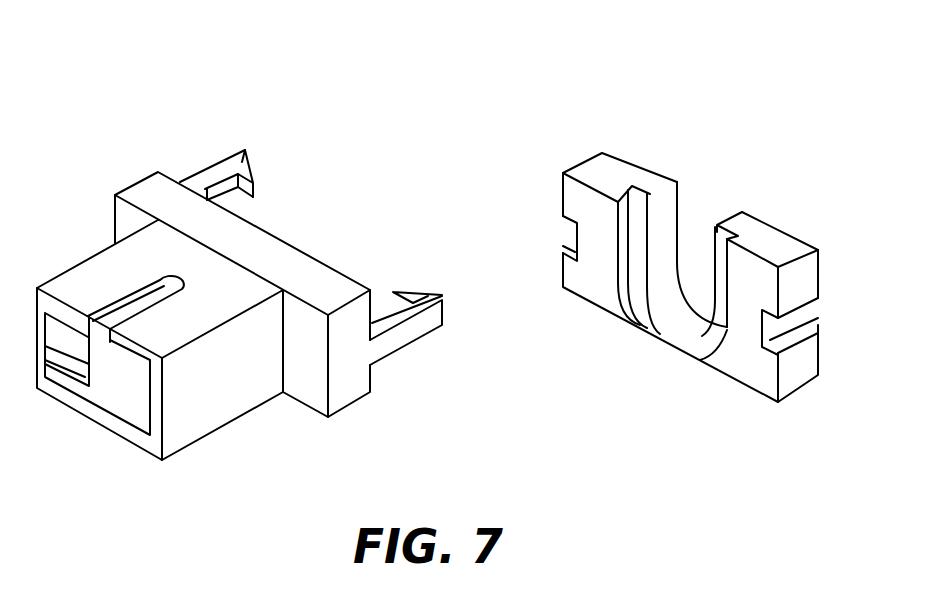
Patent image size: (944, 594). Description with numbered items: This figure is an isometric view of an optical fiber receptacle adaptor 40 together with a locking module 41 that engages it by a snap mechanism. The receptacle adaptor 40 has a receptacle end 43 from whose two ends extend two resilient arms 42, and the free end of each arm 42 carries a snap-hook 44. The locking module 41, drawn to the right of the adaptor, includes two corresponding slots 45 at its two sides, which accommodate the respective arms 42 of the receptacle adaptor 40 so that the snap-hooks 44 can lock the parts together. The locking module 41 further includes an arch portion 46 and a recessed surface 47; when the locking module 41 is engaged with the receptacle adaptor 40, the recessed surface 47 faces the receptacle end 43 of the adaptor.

The optical fiber receptacle adaptor 40 is at (364, 152).
The locking module 41 is at (737, 152).
The resilient arm 42 is at (212, 170).
The receptacle end 43 is at (265, 242).
The snap-hook 44 is at (250, 152).
The slot 45 is at (577, 222).
The arch portion 46 is at (675, 303).
The recessed surface 47 is at (700, 342).